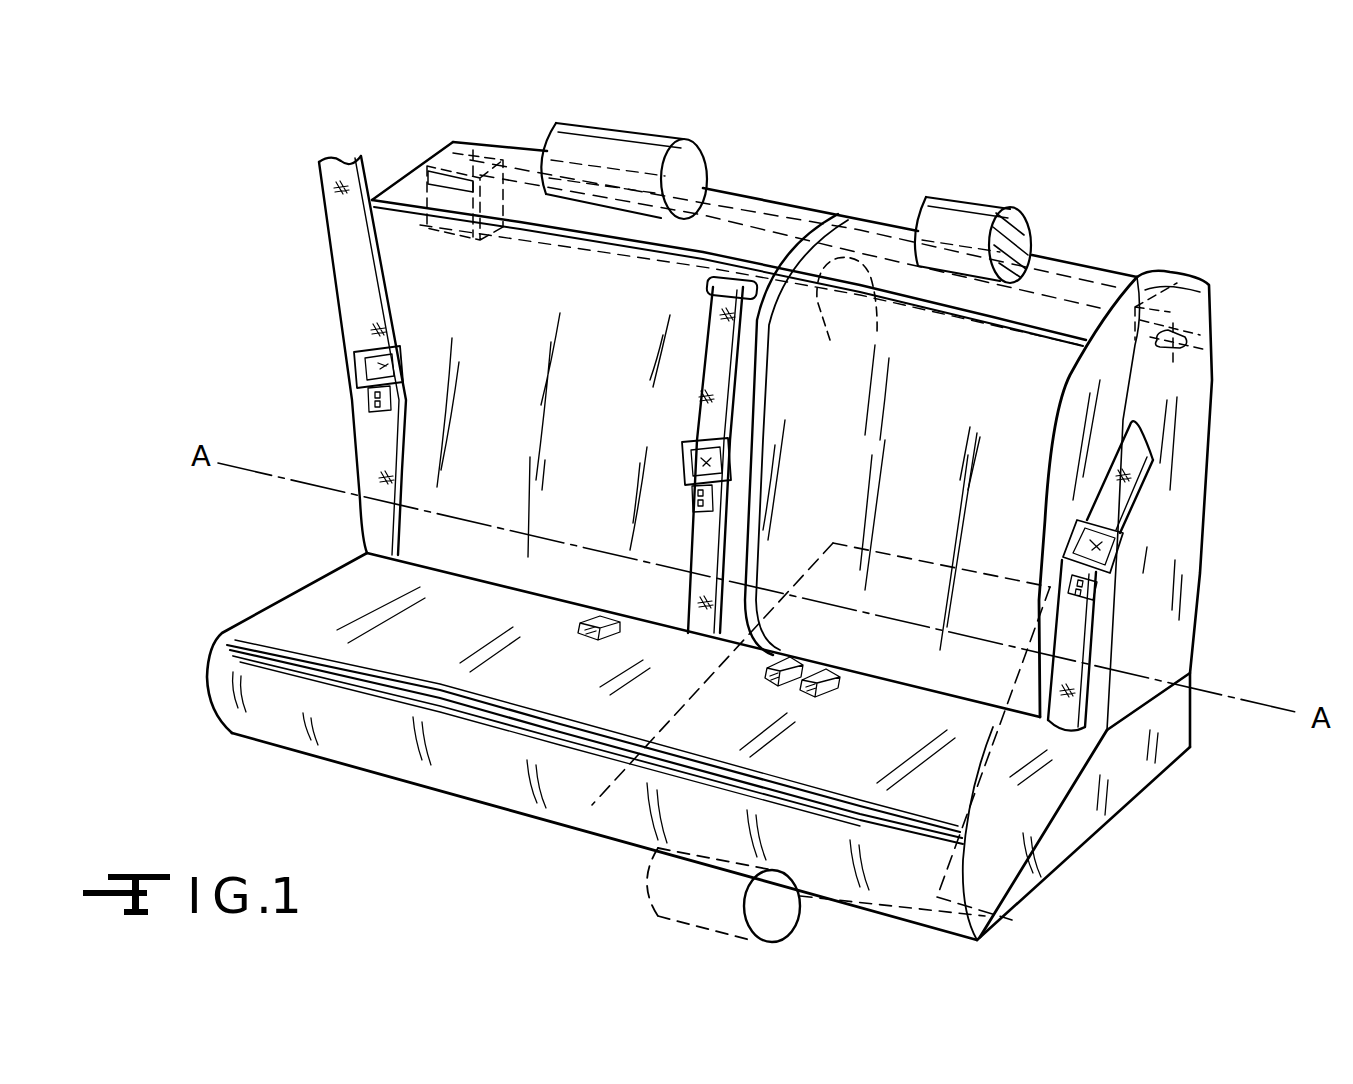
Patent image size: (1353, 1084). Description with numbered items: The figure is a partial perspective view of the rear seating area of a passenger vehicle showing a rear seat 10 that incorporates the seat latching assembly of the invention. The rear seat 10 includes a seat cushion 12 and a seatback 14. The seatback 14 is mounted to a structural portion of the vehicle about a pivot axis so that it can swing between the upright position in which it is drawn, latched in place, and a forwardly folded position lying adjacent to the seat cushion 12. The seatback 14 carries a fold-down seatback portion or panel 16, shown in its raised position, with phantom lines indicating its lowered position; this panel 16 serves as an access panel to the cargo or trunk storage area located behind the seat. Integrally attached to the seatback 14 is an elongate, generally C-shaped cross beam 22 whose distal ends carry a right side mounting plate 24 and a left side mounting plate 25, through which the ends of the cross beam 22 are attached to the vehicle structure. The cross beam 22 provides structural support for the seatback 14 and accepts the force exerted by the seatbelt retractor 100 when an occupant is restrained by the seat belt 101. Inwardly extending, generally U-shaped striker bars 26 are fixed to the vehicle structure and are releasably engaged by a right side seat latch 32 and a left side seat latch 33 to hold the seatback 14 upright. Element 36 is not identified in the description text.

The rear seat 10 is at (291, 316).
The seat cushion 12 is at (278, 607).
The seatback 14 is at (356, 432).
The seatback panel 16 is at (855, 222).
The cross beam 22 is at (1100, 278).
The right side mounting plate 24 is at (452, 138).
The left side mounting plate 25 is at (1203, 307).
The striker bars 26 is at (421, 171).
The right side seat latch 32 is at (478, 143).
The left side seat latch 33 is at (1185, 286).
The belt opening 36 is at (830, 340).
The seatbelt retractor 100 is at (870, 295).
The seat belt 101 is at (393, 288).